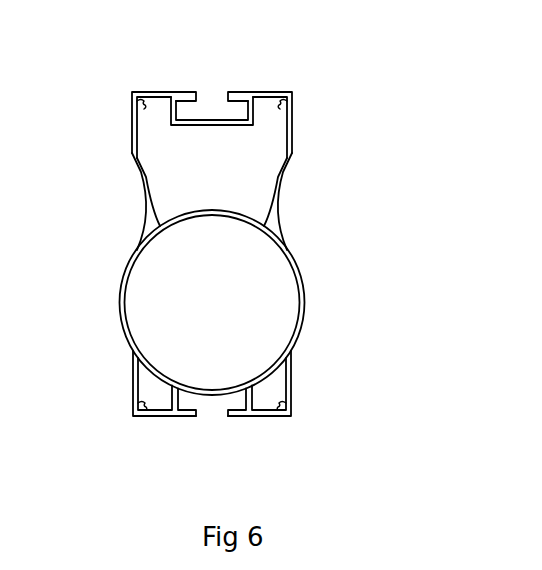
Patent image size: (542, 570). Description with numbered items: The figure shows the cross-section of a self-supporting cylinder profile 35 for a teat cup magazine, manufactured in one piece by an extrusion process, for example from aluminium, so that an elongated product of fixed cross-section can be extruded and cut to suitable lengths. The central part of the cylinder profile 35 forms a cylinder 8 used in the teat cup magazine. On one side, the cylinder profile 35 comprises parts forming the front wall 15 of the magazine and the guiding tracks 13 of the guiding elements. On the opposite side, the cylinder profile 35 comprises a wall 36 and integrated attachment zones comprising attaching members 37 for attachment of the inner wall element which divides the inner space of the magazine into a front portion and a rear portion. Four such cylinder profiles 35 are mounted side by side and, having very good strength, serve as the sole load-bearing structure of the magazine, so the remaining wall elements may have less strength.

The cylinder 8 is at (128, 263).
The guiding tracks 13 is at (212, 98).
The front wall 15 is at (152, 92).
The cylinder profile 35 is at (362, 216).
The wall 36 is at (173, 417).
The attaching members 37 is at (207, 407).